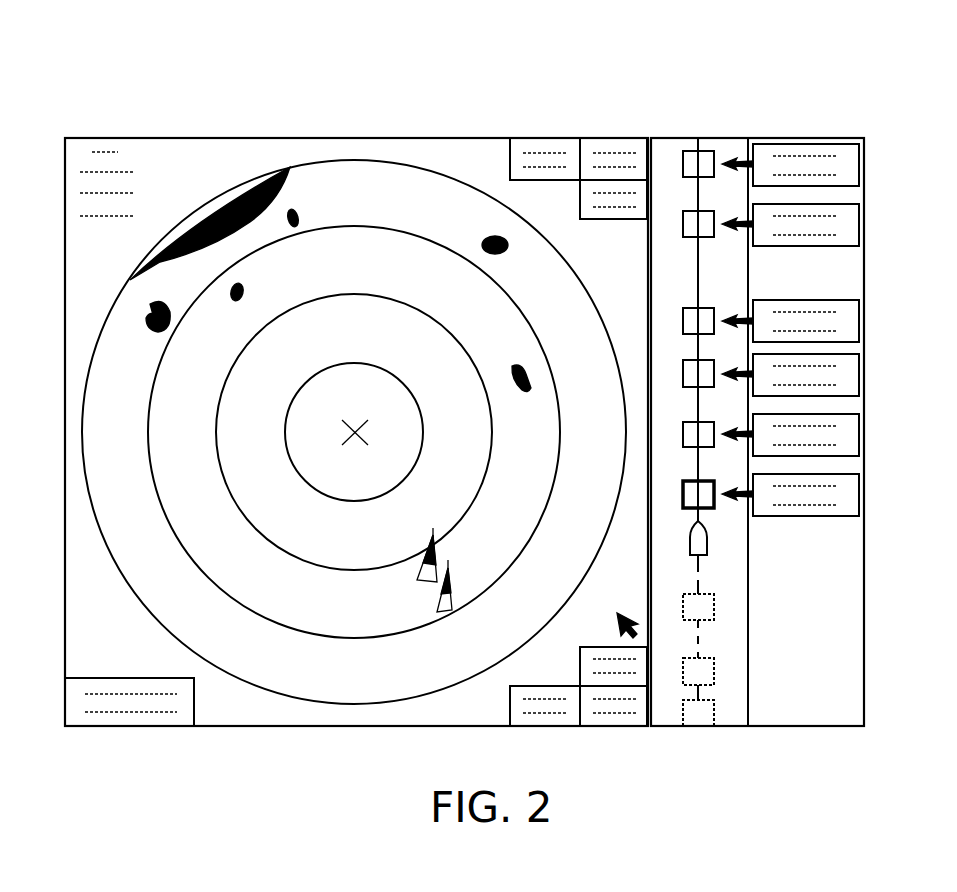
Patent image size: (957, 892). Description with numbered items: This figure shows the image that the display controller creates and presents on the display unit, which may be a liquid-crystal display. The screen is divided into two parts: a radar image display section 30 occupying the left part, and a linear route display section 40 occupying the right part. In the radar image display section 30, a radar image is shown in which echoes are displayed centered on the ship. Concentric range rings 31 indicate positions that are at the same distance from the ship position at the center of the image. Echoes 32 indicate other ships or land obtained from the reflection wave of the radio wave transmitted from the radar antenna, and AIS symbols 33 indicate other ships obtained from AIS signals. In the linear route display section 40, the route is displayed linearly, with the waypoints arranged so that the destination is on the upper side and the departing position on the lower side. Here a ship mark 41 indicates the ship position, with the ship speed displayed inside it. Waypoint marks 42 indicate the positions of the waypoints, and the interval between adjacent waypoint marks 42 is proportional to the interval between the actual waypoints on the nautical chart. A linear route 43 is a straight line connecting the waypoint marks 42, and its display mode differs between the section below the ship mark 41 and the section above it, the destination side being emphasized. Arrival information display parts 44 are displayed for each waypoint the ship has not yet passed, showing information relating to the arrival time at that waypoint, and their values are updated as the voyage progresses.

The radar image display section 30 is at (146, 152).
The range ring 31 is at (328, 363).
The echo 32 is at (240, 240).
The AIS symbol 33 is at (437, 602).
The linear route display section 40 is at (750, 138).
The ship mark 41 is at (707, 545).
The waypoint mark 42 is at (714, 607).
The linear route 43 is at (702, 638).
The arrival information display part 44 is at (859, 494).